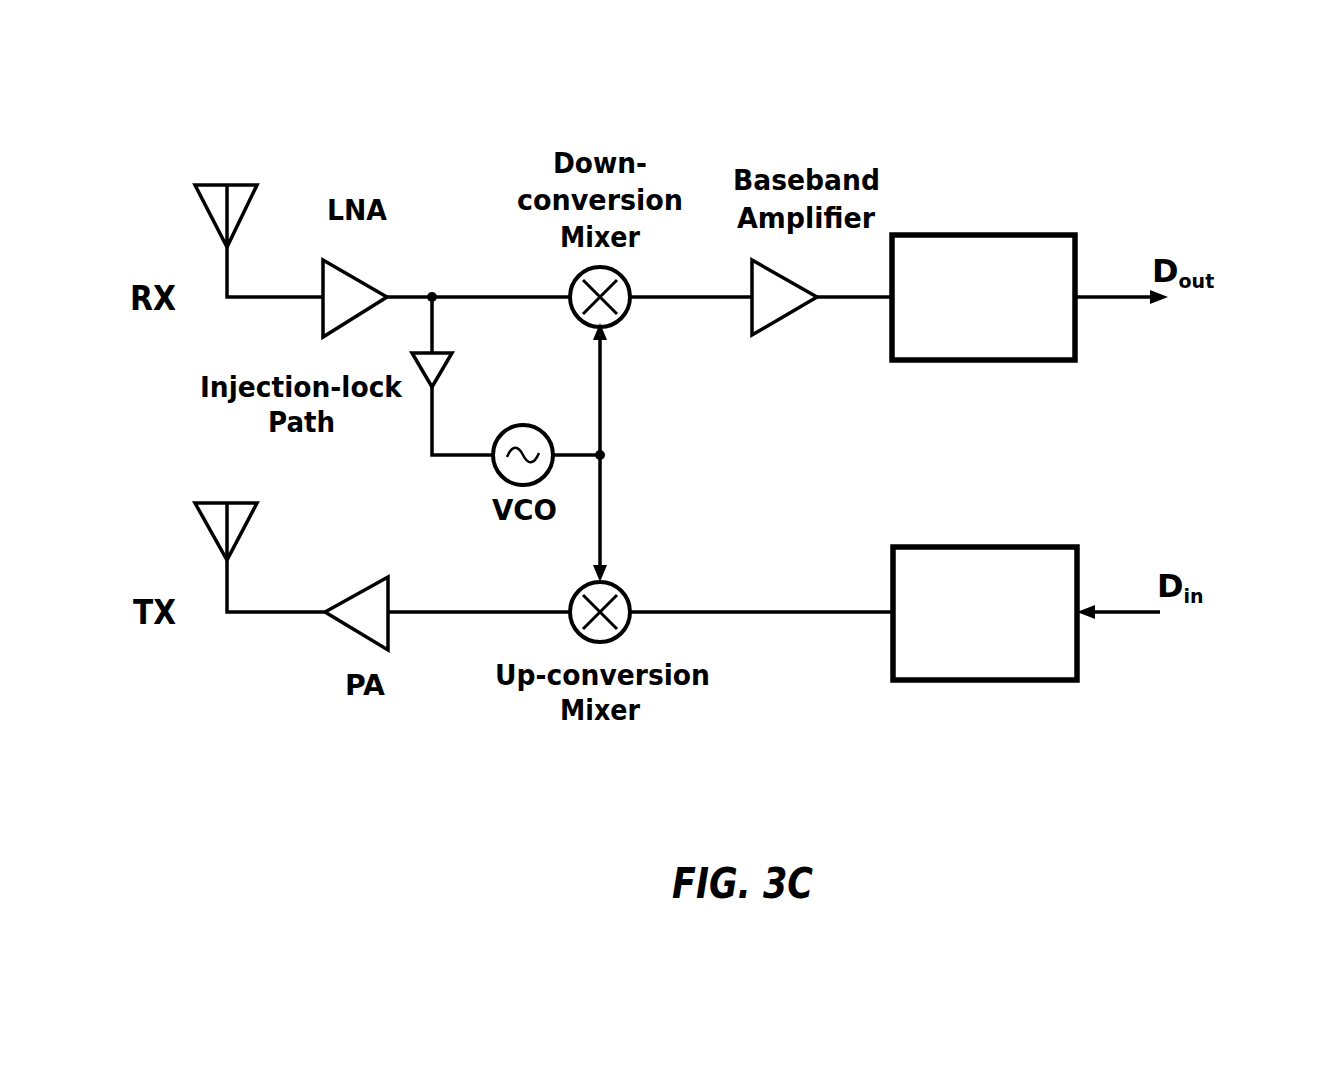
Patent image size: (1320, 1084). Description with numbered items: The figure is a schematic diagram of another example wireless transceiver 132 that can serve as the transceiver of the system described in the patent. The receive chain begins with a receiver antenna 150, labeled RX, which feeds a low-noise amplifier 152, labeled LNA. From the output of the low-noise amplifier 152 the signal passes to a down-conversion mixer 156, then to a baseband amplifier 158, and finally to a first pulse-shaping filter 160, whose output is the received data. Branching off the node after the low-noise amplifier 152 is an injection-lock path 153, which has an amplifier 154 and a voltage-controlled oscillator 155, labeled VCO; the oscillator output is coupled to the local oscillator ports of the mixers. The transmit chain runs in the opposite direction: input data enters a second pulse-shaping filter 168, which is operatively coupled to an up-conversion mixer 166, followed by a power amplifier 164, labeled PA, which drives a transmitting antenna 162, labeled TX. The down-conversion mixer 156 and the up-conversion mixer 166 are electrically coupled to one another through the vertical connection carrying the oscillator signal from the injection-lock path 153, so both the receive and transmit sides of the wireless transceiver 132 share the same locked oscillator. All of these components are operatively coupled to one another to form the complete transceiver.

The wireless transceiver 132 is at (1177, 190).
The receiver antenna 150 is at (257, 185).
The low-noise amplifier 152 is at (366, 285).
The injection-lock path 153 is at (186, 396).
The amplifier 154 is at (442, 375).
The voltage-controlled oscillator 155 is at (512, 428).
The down-conversion mixer 156 is at (626, 289).
The baseband amplifier 158 is at (798, 287).
The first pulse-shaping filter 160 is at (997, 235).
The transmitting antenna 162 is at (257, 503).
The power amplifier 164 is at (390, 590).
The up-conversion mixer 166 is at (623, 596).
The second pulse-shaping filter 168 is at (1012, 547).